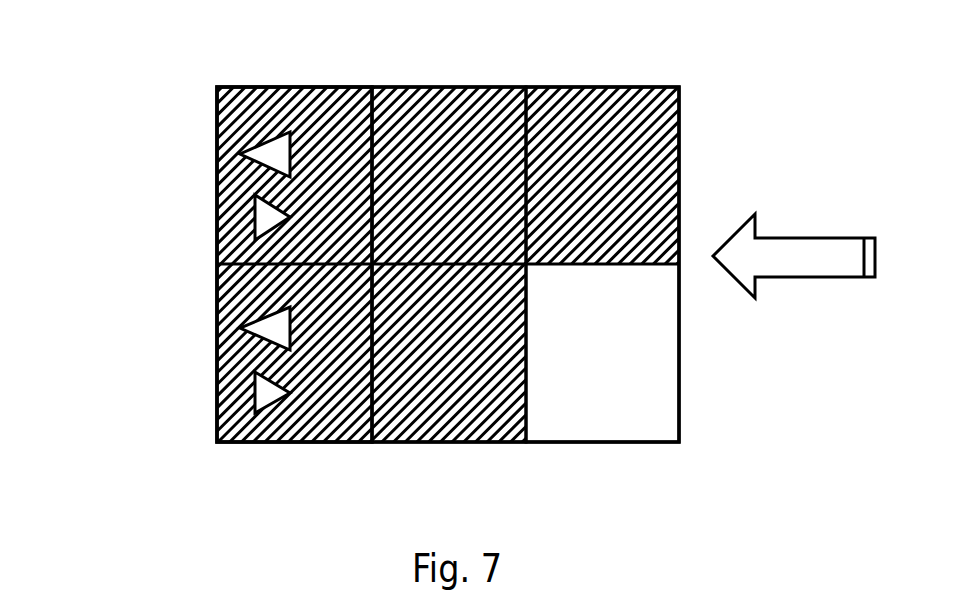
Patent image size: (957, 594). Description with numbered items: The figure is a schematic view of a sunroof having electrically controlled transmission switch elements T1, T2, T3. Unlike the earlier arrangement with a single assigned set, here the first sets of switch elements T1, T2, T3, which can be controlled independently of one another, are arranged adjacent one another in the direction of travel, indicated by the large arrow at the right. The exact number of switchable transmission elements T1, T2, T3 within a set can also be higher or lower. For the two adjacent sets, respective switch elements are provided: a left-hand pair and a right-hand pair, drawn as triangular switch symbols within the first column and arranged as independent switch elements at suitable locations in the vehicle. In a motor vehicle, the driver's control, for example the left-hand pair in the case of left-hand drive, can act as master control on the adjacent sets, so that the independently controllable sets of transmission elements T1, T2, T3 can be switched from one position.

The electrically controlled transmission switch element T1 is at (294, 303).
The electrically controlled transmission switch element T2 is at (449, 303).
The electrically controlled transmission switch element T3 is at (602, 303).